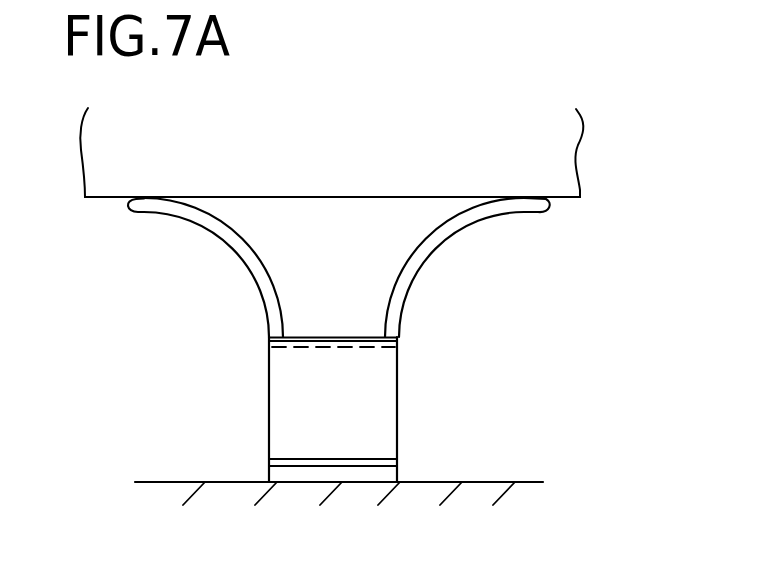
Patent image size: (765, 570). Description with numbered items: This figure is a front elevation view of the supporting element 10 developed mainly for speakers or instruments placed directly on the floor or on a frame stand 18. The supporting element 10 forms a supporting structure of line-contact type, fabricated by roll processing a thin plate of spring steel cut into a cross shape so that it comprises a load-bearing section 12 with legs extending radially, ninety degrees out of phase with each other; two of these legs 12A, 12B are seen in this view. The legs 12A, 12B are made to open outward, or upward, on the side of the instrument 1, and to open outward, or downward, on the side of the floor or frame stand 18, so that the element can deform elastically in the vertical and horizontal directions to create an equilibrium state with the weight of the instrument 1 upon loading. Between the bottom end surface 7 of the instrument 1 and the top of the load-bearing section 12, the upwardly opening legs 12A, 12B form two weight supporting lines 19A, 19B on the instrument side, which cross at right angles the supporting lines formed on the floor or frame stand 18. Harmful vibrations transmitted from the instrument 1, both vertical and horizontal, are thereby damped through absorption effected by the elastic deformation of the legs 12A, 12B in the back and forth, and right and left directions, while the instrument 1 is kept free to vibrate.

The instrument 1 is at (553, 140).
The bottom end surface 7 is at (302, 197).
The weight supporting line 19A is at (153, 197).
The weight supporting line 19B is at (522, 197).
The leg 12A is at (247, 260).
The leg 12B is at (445, 232).
The supporting element 10 is at (409, 343).
The load-bearing section 12 is at (388, 388).
The frame stand 18 is at (473, 481).